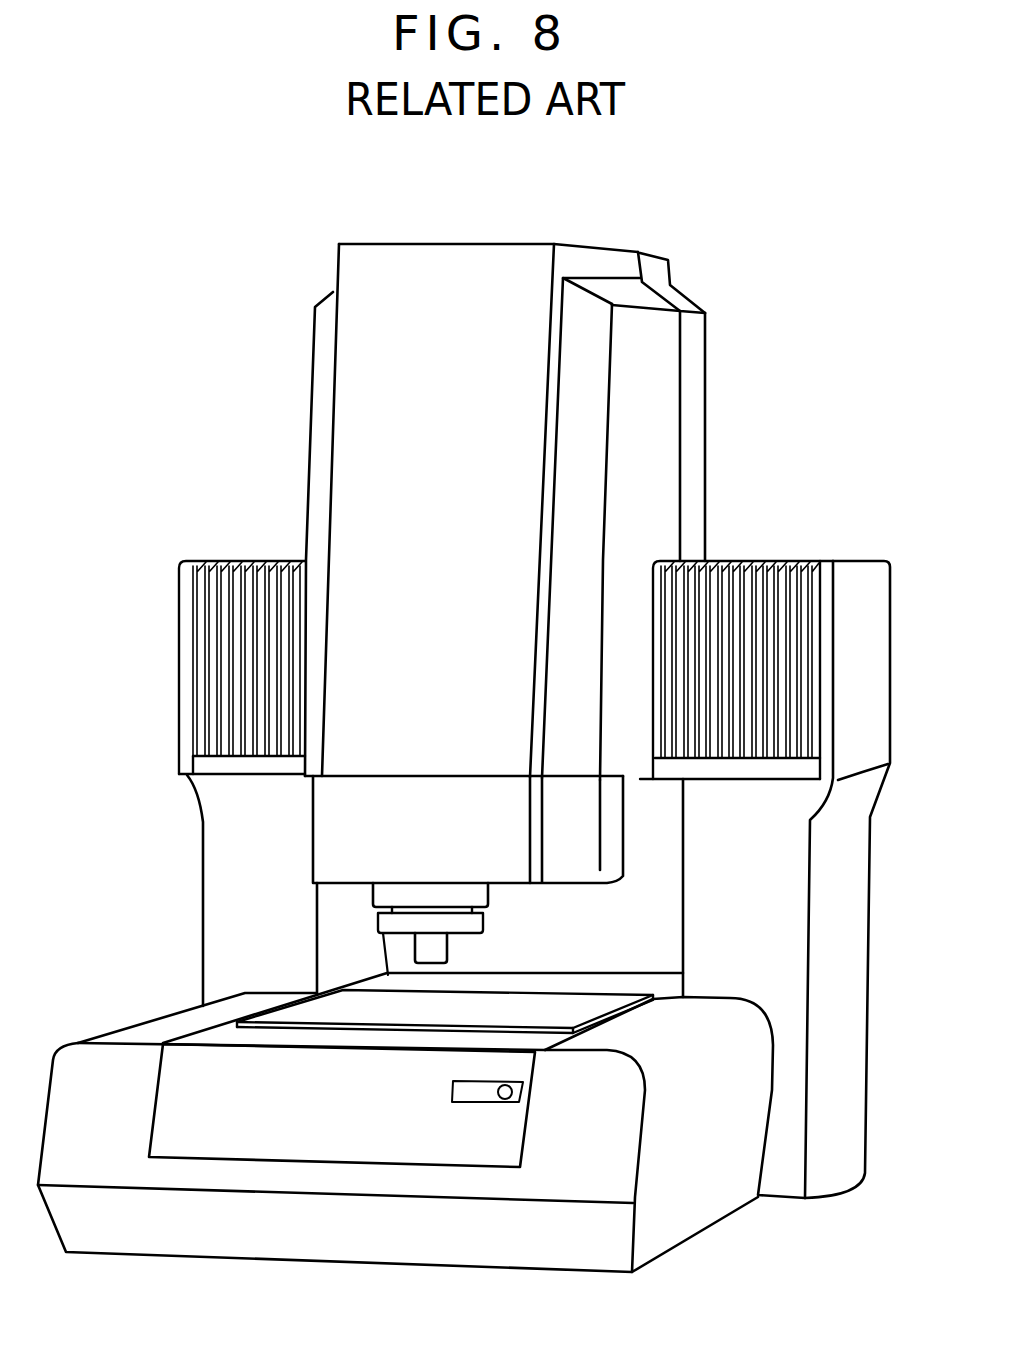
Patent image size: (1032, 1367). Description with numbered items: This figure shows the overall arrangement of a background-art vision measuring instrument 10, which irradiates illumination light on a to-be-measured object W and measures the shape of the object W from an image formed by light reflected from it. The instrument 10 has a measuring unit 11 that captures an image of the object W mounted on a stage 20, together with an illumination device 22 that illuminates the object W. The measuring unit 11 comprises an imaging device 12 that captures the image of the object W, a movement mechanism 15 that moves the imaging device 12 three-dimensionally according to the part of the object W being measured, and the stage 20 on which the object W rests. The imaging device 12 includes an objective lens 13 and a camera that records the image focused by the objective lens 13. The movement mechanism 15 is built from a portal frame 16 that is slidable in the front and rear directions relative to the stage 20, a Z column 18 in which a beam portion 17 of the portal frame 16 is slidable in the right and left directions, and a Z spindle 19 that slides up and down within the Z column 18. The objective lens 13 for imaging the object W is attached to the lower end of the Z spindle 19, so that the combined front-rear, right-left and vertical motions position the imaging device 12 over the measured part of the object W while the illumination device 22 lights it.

The vision measuring instrument 10 is at (806, 268).
The measuring unit 11 is at (239, 523).
The imaging device 12 is at (481, 940).
The objective lens 13 is at (423, 952).
The movement mechanism 15 is at (752, 480).
The portal frame 16 is at (868, 577).
The beam portion 17 is at (803, 573).
The Z column 18 is at (416, 268).
The Z spindle 19 is at (380, 896).
The stage 20 is at (165, 1027).
The illumination device 22 is at (482, 922).
The to-be-measured object W is at (605, 1000).